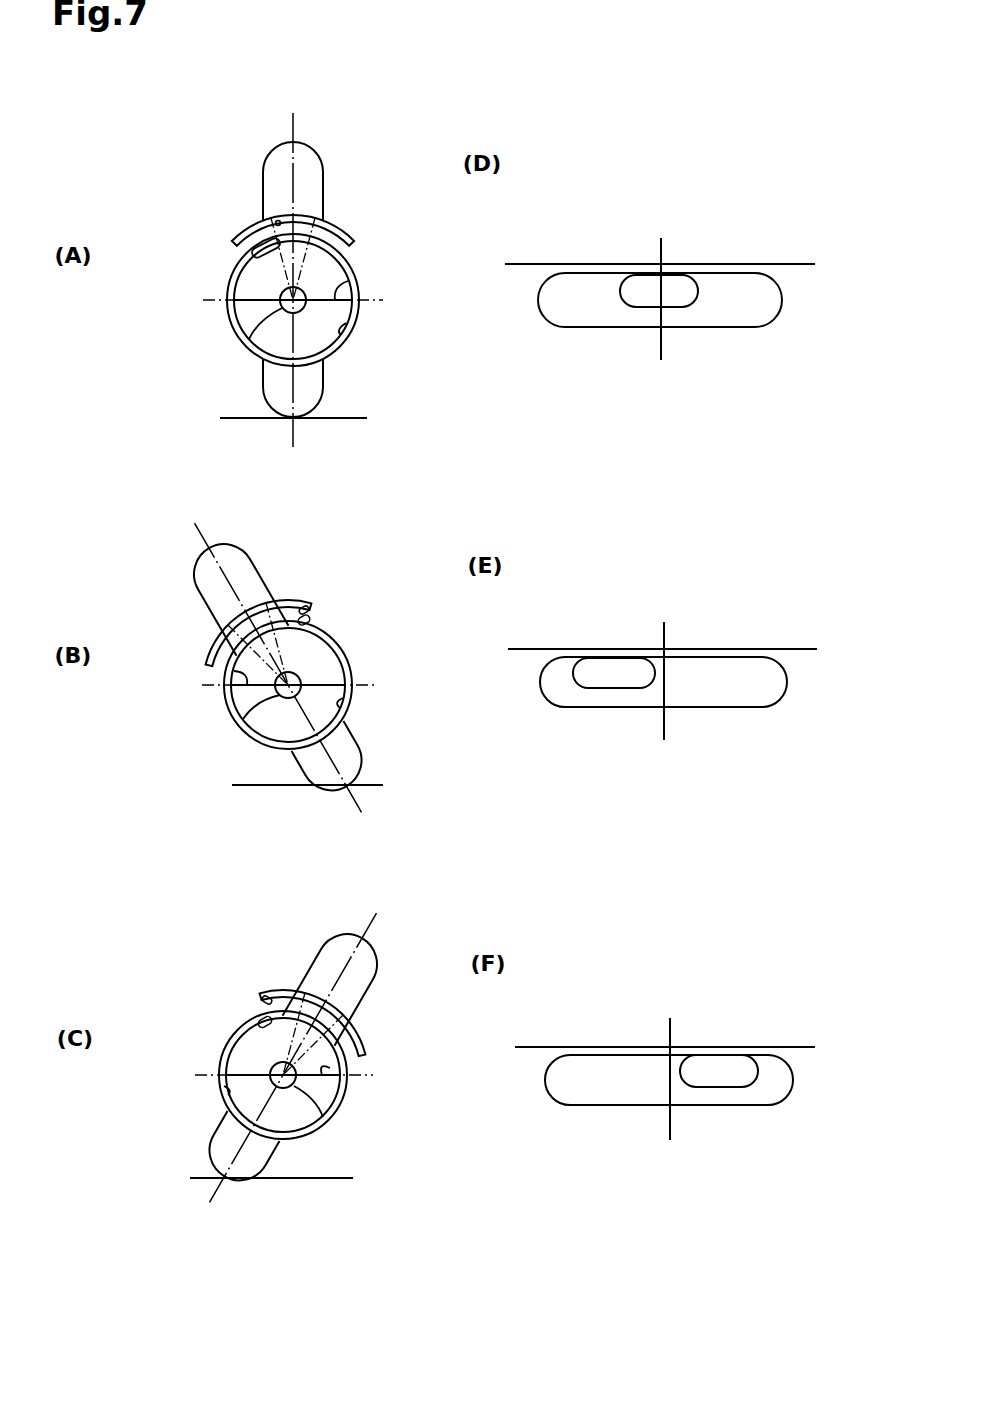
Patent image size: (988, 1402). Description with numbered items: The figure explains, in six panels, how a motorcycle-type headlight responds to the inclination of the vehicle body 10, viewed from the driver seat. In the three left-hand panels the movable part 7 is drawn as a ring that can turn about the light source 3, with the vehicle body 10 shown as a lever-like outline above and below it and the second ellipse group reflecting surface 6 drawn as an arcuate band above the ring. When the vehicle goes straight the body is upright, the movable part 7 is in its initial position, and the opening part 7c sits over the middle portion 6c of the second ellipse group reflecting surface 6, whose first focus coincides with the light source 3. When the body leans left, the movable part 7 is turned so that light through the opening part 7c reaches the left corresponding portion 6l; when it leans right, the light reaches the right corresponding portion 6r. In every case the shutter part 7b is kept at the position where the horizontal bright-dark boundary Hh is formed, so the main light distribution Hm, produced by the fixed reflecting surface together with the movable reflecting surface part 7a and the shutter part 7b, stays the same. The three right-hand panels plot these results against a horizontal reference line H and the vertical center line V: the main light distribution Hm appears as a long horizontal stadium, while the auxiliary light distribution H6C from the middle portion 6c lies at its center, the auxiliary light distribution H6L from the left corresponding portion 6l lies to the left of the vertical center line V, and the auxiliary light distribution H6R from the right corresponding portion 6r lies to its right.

The vehicle body 10 is at (312, 160).
The second ellipse group reflecting surface 6 is at (336, 224).
The middle portion of the second ellipse group reflecting surface 6c is at (277, 221).
The left corresponding portion 6l is at (306, 606).
The right corresponding portion 6r is at (265, 998).
The movable part 7 is at (228, 283).
The movable reflecting surface part 7a is at (345, 330).
The shutter part 7b is at (345, 286).
The opening part 7c is at (252, 255).
The light source 3 is at (242, 340).
The horizontal reference axis H is at (671, 657).
The vertical center line V is at (666, 702).
The main light distribution Hm is at (740, 318).
The horizontal bright-dark boundary Hh is at (595, 273).
The auxiliary light distribution H6C is at (677, 285).
The auxiliary light distribution H6L is at (612, 664).
The auxiliary light distribution H6R is at (718, 1058).